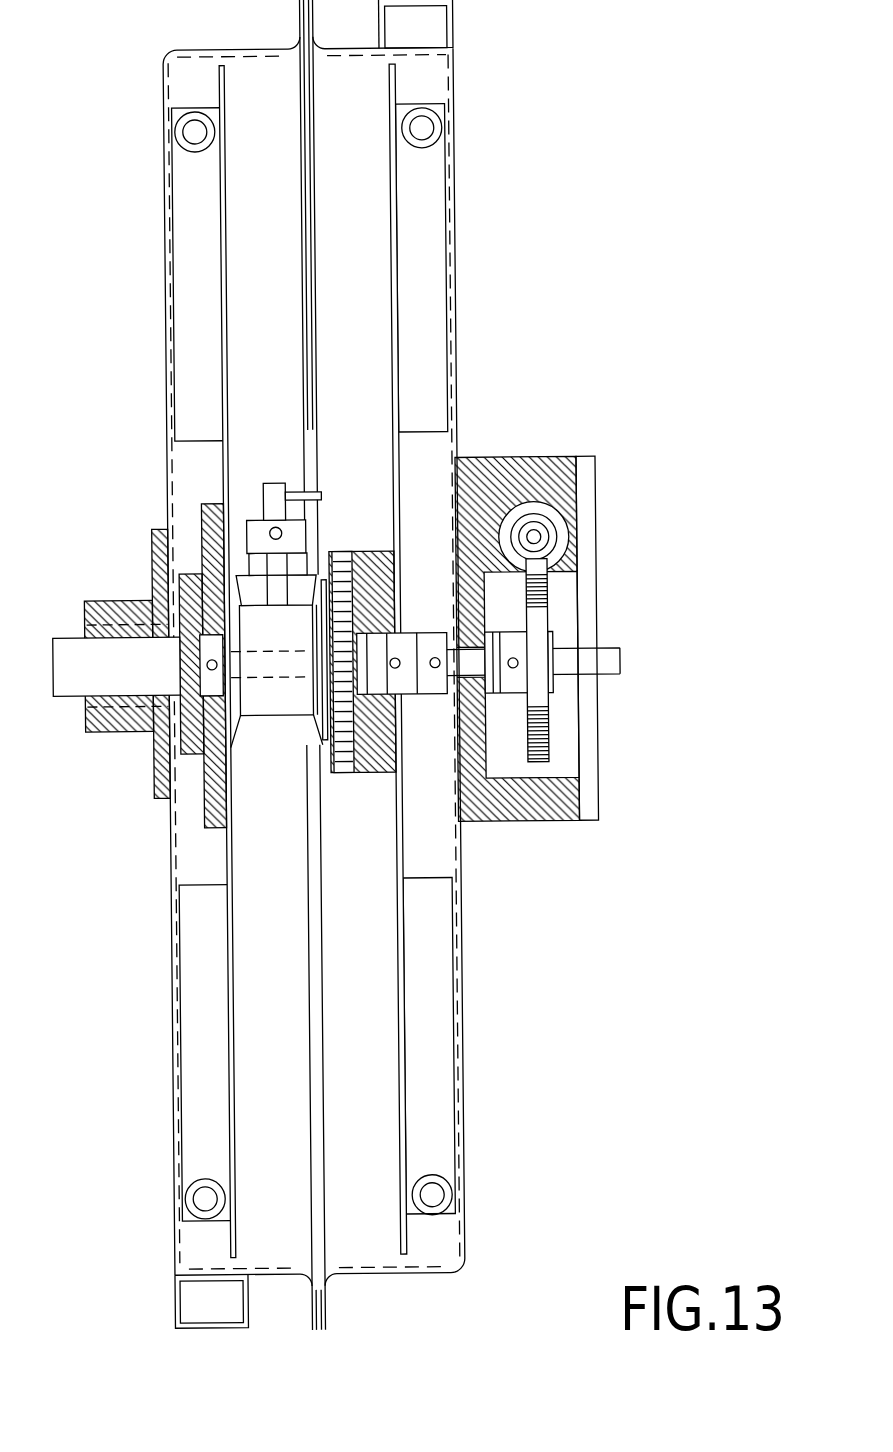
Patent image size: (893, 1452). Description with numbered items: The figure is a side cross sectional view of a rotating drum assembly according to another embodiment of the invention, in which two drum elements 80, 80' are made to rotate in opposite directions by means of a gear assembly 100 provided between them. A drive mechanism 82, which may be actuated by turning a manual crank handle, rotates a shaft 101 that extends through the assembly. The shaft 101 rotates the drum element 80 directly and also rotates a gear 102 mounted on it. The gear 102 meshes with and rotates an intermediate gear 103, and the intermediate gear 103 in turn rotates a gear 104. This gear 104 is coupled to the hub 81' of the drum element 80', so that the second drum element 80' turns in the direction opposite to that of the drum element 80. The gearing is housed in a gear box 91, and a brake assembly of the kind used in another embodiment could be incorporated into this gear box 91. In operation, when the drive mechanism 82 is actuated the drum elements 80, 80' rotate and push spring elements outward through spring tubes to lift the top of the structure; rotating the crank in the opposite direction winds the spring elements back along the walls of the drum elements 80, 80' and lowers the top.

The drum element 80 is at (489, 658).
The drum element 80' is at (141, 663).
The hub 81' is at (149, 631).
The drive mechanism 82 is at (575, 619).
The gear box 91 is at (533, 819).
The gear assembly 100 is at (307, 660).
The shaft 101 is at (561, 664).
The gear 102 is at (317, 737).
The intermediate gear 103 is at (318, 577).
The gear 104 is at (240, 722).